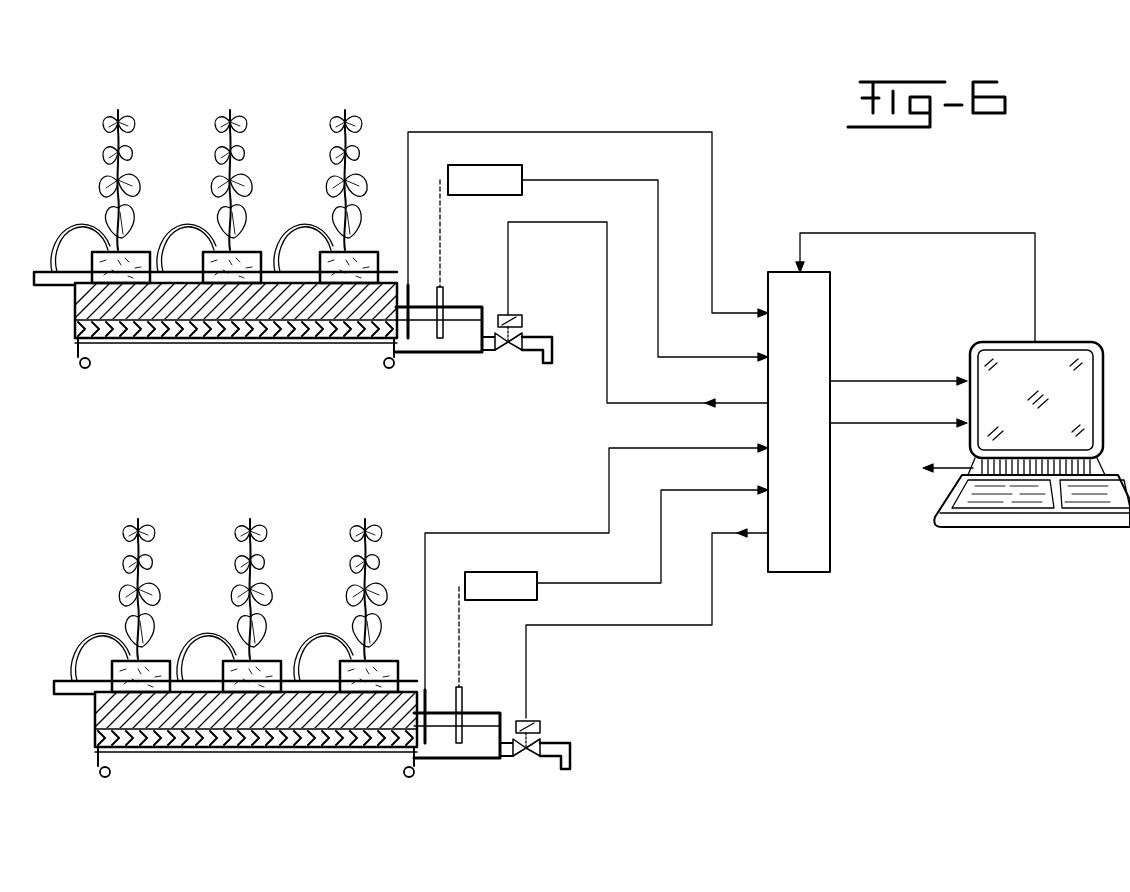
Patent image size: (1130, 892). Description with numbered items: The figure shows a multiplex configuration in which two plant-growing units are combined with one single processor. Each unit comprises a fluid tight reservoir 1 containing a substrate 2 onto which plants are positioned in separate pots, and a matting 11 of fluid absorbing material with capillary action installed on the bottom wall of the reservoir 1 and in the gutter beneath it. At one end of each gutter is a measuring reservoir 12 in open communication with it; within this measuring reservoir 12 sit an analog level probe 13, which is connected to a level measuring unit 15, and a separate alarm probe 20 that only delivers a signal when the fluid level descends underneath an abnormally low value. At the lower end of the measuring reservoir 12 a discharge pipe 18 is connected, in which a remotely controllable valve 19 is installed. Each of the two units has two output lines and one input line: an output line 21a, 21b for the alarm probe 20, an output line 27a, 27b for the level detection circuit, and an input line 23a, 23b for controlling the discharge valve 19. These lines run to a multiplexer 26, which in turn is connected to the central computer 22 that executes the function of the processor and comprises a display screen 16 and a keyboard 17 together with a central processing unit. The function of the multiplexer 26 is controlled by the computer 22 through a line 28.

The fluid tight reservoir 1 is at (250, 443).
The substrate 2 is at (210, 300).
The matting 11 is at (265, 325).
The measuring reservoir 12 is at (457, 350).
The analog level probe 13 is at (445, 295).
The level measuring unit 15 is at (485, 175).
The display screen 16 is at (1065, 360).
The keyboard 17 is at (1095, 505).
The discharge pipe 18 is at (545, 360).
The remotely controllable valve 19 is at (510, 350).
The alarm probe 20 is at (423, 293).
The output line 21a is at (570, 132).
The output line 21b is at (478, 533).
The computer 22 is at (1010, 465).
The input line 23a is at (562, 222).
The input line 23b is at (614, 625).
The multiplexer 26 is at (806, 556).
The output line 27a is at (620, 180).
The output line 27b is at (572, 583).
The line 28 is at (938, 232).